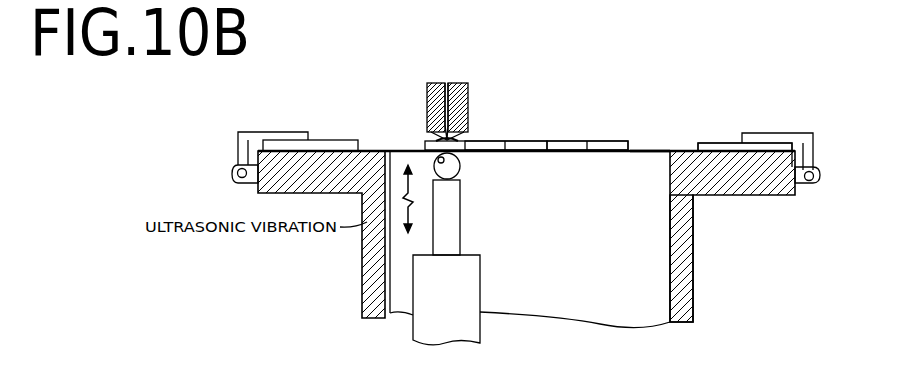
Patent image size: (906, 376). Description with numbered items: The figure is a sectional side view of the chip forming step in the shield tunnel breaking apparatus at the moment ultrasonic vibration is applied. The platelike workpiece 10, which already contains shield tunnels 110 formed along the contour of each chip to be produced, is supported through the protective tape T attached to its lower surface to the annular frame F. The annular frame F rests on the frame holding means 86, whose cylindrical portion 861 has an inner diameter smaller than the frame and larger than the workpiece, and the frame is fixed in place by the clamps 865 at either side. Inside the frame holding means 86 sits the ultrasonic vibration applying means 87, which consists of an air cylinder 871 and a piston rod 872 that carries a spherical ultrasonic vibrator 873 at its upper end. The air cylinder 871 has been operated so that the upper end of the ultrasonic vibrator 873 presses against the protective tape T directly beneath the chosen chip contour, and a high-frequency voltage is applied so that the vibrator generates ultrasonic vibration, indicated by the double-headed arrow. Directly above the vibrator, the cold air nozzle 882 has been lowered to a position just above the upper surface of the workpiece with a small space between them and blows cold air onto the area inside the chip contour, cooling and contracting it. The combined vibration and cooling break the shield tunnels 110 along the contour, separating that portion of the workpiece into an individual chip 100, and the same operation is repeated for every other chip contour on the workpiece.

The platelike workpiece 10 is at (558, 113).
The chip 100 is at (572, 142).
The shield tunnel 110 is at (553, 141).
The frame holding means 86 is at (717, 273).
The cylindrical portion 861 is at (683, 243).
The clamp 865 is at (272, 132).
The ultrasonic vibration applying means 87 is at (494, 249).
The air cylinder 871 is at (467, 295).
The piston rod 872 is at (455, 230).
The ultrasonic vibrator 873 is at (462, 168).
The cold air nozzle 882 is at (427, 93).
The protective tape T is at (652, 150).
The annular frame F is at (722, 143).